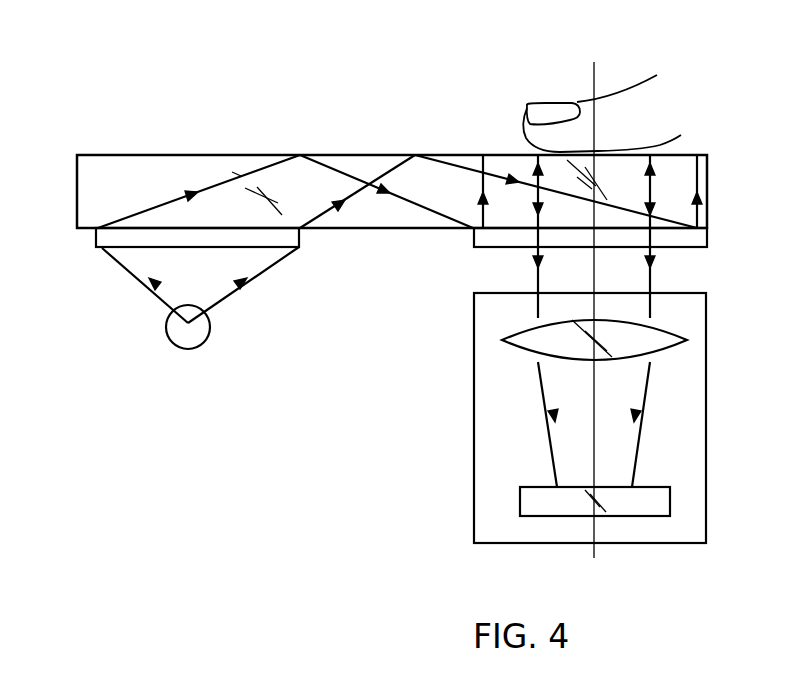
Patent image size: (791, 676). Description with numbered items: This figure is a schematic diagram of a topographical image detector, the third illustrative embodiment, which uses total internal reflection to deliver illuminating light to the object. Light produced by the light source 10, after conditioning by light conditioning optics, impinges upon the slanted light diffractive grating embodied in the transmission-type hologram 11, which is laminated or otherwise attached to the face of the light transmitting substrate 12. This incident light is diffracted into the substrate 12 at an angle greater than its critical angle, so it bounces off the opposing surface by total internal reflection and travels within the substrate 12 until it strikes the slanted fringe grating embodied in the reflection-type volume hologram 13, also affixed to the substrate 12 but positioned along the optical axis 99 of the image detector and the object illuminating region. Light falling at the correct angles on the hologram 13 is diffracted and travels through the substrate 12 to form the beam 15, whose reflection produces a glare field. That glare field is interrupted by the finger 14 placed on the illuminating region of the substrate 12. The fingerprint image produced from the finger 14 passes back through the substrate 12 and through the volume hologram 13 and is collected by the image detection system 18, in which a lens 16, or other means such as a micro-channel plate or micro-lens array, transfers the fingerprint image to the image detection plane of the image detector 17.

The light source 10 is at (210, 325).
The transmission-type hologram 11 is at (94, 234).
The light transmitting substrate 12 is at (142, 154).
The reflection-type hologram 13 is at (520, 240).
The finger 14 is at (562, 108).
The beam 15 is at (599, 180).
The lens 16 is at (512, 332).
The image detector 17 is at (520, 505).
The image detection system 18 is at (473, 430).
The optical axis 99 is at (593, 84).